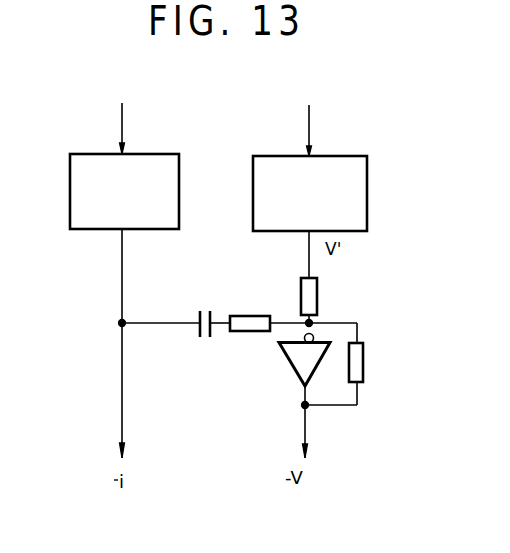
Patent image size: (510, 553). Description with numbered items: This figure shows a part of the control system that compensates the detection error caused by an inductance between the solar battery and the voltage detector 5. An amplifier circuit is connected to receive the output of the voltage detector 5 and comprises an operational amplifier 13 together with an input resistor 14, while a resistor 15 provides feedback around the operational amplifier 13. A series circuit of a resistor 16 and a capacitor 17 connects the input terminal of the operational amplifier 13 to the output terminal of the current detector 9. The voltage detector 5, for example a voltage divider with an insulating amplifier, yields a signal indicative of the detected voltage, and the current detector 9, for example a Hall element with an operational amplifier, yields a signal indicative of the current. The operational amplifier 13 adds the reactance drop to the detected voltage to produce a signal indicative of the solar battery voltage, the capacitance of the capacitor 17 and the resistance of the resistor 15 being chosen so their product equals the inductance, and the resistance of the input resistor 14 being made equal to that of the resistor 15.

The voltage detector 5 is at (345, 156).
The current detector 9 is at (90, 153).
The operational amplifier 13 is at (292, 367).
The input resistor 14 is at (320, 297).
The resistor 15 is at (363, 357).
The resistor 16 is at (262, 315).
The capacitor 17 is at (213, 310).